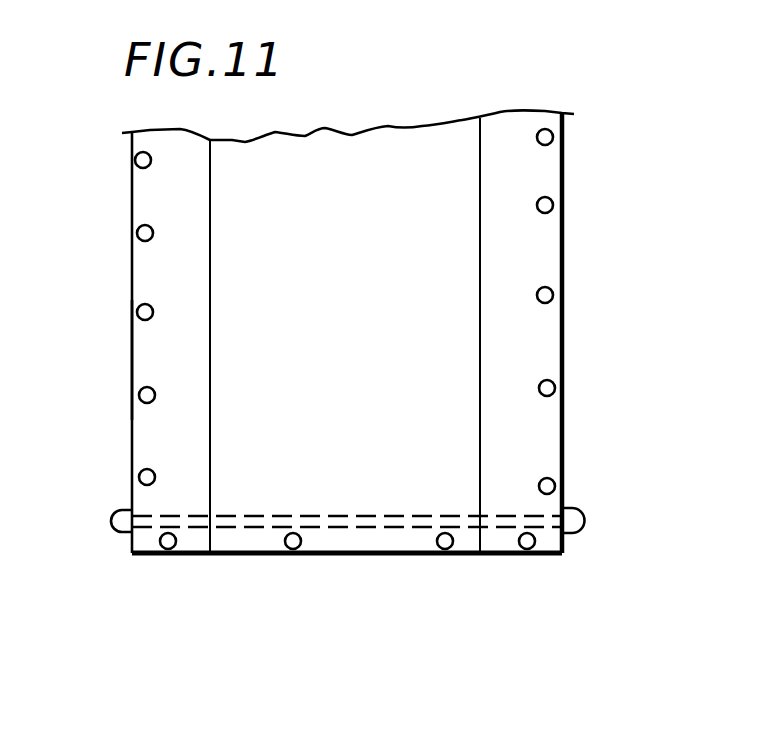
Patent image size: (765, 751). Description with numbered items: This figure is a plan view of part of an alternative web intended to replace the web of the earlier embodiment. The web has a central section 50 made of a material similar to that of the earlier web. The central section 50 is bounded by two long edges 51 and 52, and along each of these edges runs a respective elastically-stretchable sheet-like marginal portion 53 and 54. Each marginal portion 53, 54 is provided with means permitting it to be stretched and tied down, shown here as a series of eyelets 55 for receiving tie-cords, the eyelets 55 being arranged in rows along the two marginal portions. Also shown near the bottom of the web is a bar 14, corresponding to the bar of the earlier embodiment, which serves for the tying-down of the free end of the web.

The bar 14 is at (573, 533).
The central section 50 is at (345, 262).
The long edge 51 is at (210, 258).
The long edge 52 is at (480, 245).
The elastically-stretchable sheet-like marginal portion 53 is at (150, 355).
The elastically-stretchable sheet-like marginal portion 54 is at (543, 348).
The eyelets 55 is at (553, 202).